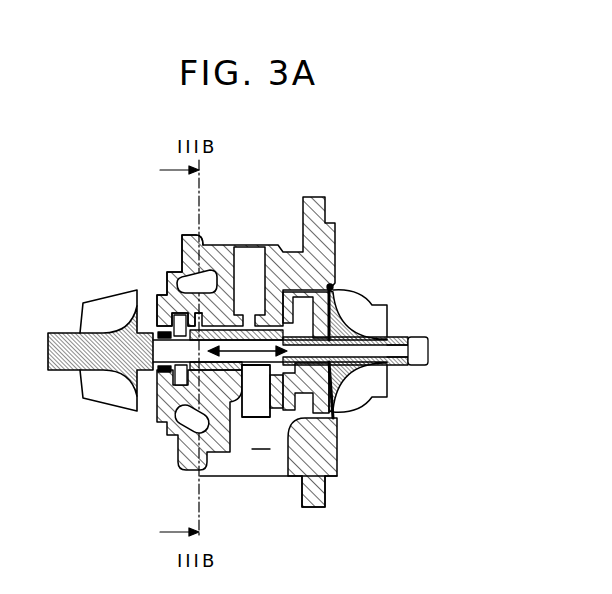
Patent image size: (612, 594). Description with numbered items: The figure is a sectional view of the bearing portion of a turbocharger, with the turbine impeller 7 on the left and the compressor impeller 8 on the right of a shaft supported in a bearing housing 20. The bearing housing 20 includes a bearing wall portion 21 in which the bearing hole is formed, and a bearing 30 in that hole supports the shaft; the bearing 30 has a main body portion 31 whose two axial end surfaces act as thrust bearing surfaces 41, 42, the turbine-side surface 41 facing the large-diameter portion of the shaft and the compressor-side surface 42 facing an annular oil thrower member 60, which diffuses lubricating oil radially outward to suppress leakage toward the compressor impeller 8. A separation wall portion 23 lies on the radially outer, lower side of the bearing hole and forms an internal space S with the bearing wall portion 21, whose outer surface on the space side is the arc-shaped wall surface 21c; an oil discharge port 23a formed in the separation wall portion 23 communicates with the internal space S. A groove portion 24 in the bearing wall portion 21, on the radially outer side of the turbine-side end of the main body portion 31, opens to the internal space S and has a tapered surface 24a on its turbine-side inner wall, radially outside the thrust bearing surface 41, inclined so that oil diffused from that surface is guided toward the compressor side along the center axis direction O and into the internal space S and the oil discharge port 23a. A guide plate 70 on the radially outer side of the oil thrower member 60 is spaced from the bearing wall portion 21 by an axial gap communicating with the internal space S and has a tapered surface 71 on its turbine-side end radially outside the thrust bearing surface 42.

The turbine impeller 7 is at (92, 300).
The compressor impeller 8 is at (390, 323).
The bearing housing 20 is at (278, 245).
The bearing wall portion 21 is at (195, 438).
The arc-shaped wall surface 21c is at (185, 422).
The separation wall portion 23 is at (212, 478).
The oil discharge port 23a is at (258, 478).
The groove portion 24 is at (193, 315).
The tapered surface 24a is at (177, 288).
The bearing 30 is at (168, 390).
The main body portion 31 is at (183, 380).
The thrust bearing surface 41 is at (150, 372).
The thrust bearing surface 42 is at (340, 392).
The oil thrower member 60 is at (332, 288).
The guide plate 70 is at (330, 402).
The tapered surface 71 is at (332, 478).
The center axis direction O is at (333, 346).
The internal space S is at (261, 437).